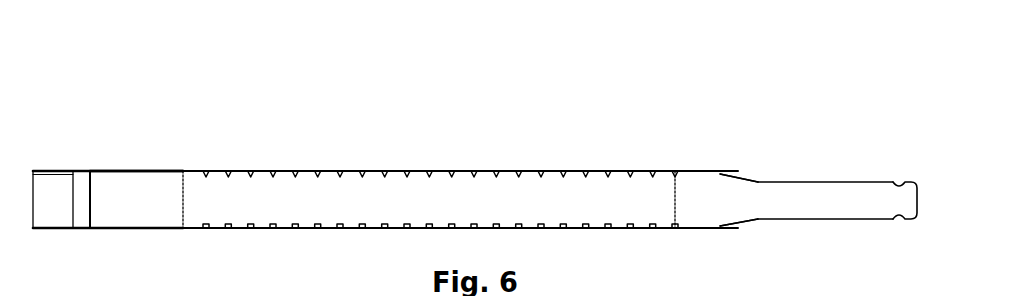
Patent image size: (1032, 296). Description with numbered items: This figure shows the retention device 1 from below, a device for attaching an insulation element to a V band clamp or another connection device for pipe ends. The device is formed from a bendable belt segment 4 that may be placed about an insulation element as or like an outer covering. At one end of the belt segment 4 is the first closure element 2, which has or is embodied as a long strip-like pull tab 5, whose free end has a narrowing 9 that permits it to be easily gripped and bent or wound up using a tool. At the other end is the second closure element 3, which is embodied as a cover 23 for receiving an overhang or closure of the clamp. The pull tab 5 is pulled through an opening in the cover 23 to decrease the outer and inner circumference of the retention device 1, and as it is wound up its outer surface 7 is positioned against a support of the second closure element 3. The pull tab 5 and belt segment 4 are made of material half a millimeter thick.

The retention device 1 is at (643, 131).
The first closure element 2 is at (708, 192).
The second closure element 3 is at (144, 193).
The belt segment 4 is at (370, 197).
The pull tab 5 is at (772, 202).
The outer surface 7 is at (735, 195).
The narrowing 9 is at (899, 184).
The cover 23 is at (103, 172).